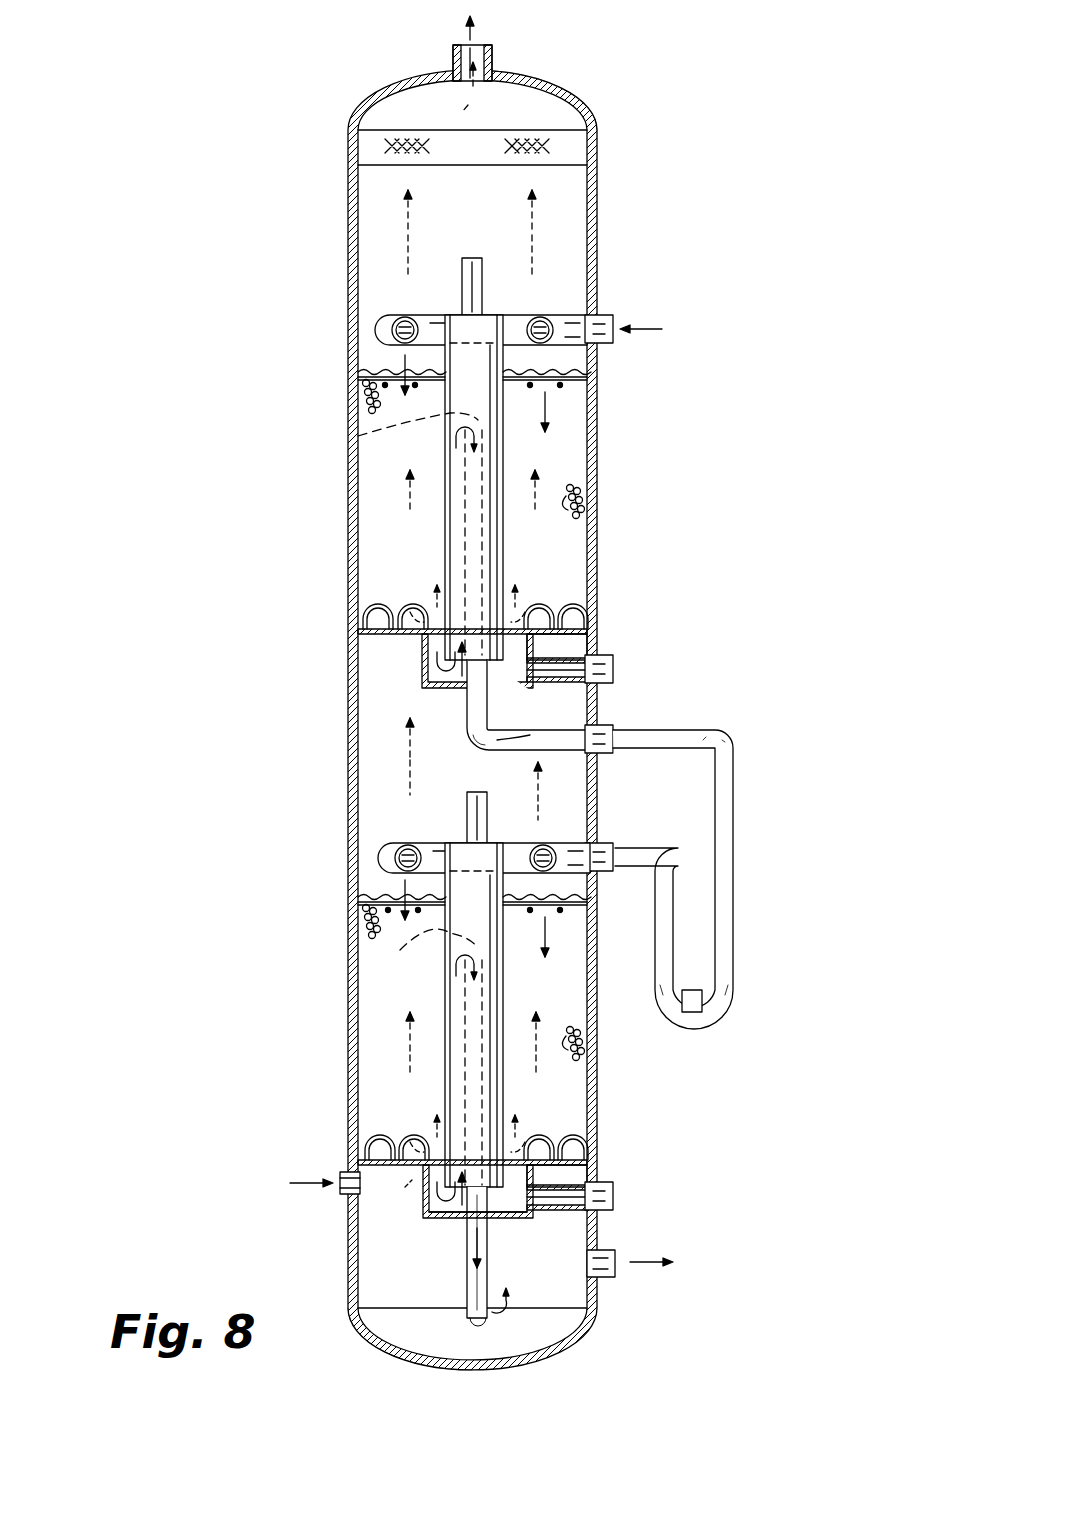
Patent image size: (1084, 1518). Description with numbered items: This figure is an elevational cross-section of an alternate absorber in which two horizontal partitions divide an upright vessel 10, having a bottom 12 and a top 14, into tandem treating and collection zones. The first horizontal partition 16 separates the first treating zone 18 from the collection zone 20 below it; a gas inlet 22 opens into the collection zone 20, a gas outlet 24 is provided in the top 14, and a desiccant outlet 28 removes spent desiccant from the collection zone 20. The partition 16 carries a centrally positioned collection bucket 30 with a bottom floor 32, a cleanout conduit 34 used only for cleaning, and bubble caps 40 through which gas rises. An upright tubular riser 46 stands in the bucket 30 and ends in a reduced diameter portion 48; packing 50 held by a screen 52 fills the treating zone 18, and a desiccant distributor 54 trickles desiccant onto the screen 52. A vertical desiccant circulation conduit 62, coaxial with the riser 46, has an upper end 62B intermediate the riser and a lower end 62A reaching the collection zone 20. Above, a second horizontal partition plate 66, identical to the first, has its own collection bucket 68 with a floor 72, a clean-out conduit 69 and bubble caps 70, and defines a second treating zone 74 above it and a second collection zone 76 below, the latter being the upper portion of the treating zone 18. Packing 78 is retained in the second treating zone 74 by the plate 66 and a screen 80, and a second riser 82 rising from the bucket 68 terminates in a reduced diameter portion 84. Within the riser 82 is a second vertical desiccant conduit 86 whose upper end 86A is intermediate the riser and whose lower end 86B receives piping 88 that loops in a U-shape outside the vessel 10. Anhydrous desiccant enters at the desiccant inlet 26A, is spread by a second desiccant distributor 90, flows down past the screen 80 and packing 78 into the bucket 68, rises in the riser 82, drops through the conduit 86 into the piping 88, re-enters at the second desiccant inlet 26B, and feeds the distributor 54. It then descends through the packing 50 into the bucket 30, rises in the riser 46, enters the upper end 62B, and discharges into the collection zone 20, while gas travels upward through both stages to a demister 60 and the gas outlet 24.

The vessel 10 is at (350, 653).
The bottom 12 is at (470, 1378).
The top 14 is at (594, 105).
The horizontal partition 16 is at (365, 1147).
The treating zone 18 is at (574, 1006).
The collection zone 20 is at (561, 1305).
The gas inlet 22 is at (345, 1196).
The gas outlet 24 is at (492, 60).
The desiccant inlet 26A is at (613, 320).
The second desiccant inlet 26B is at (606, 843).
The desiccant outlet 28 is at (620, 1262).
The collection bucket 30 is at (425, 1190).
The bottom floor 32 is at (450, 1222).
The cleanout conduit 34 is at (615, 1196).
The bubble caps 40 is at (573, 1150).
The upright tubular riser 46 is at (445, 1086).
The reduced diameter portion 48 is at (467, 817).
The packing 50 is at (590, 1052).
The screen 52 is at (365, 930).
The desiccant distributor 54 is at (400, 855).
The demister 60 is at (580, 148).
The vertical desiccant circulation conduit 62 is at (495, 1094).
The lower end 62A is at (470, 1316).
The upper end 62B is at (425, 957).
The second horizontal partition plate 66 is at (580, 631).
The collection bucket 68 is at (428, 658).
The clean-out conduit 69 is at (612, 672).
The bubble caps 70 is at (573, 612).
The floor 72 is at (450, 692).
The second treating zone 74 is at (478, 232).
The second collection zone 76 is at (453, 794).
The packing 78 is at (590, 495).
The screen 80 is at (582, 376).
The second riser 82 is at (493, 465).
The reduced diameter portion 84 is at (465, 290).
The second vertical desiccant conduit 86 is at (445, 455).
The upper end 86A is at (358, 436).
The lower end 86B is at (535, 728).
The piping 88 is at (580, 738).
The second desiccant distributor 90 is at (545, 318).